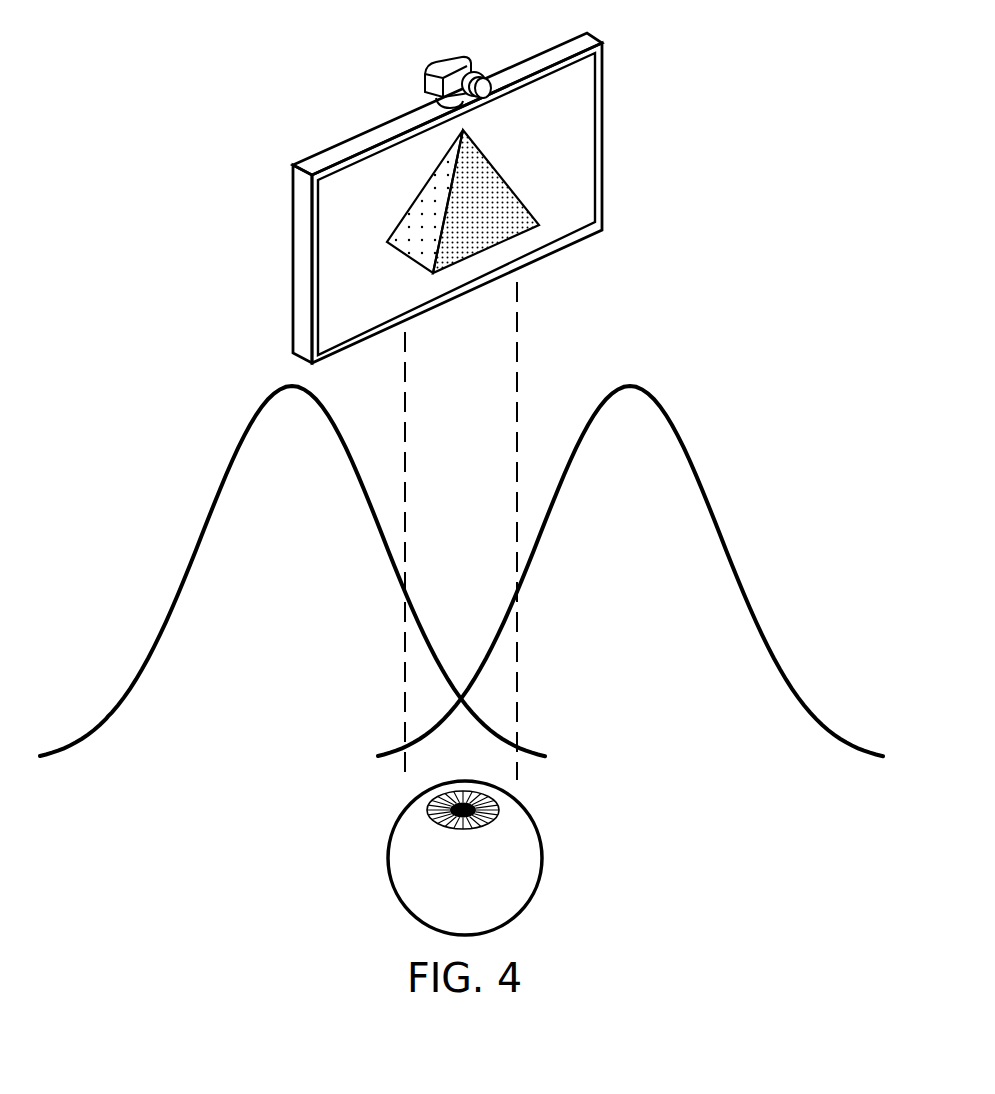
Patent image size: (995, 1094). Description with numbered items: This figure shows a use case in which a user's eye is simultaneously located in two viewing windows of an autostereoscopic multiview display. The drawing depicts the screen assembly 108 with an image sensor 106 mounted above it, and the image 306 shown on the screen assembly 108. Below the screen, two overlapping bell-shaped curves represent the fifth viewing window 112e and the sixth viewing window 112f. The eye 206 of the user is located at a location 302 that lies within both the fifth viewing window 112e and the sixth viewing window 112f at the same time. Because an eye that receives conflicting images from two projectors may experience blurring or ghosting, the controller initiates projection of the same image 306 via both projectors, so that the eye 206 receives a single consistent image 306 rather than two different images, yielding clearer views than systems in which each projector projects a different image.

The image sensor 106 is at (461, 60).
The screen assembly 108 is at (605, 137).
The image 306 is at (392, 188).
The location 302 is at (460, 600).
The fifth viewing window 112e is at (232, 457).
The sixth viewing window 112f is at (693, 455).
The eye 206 is at (527, 908).